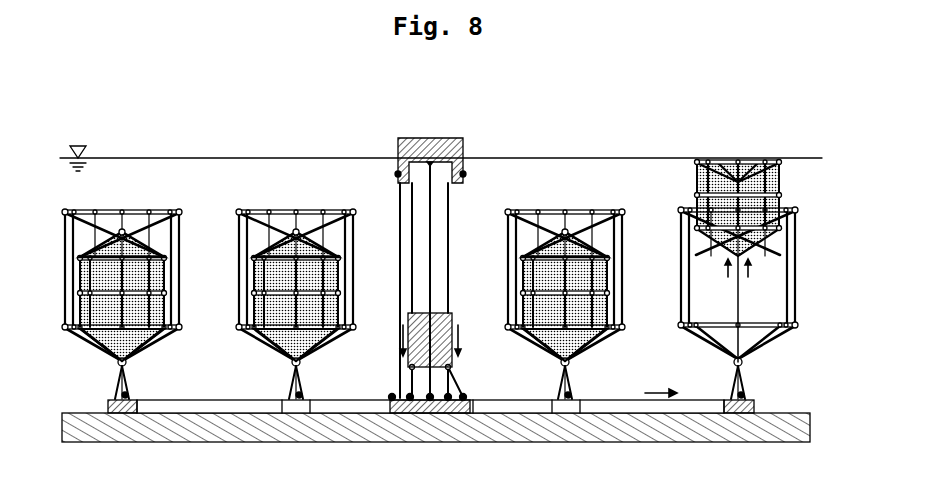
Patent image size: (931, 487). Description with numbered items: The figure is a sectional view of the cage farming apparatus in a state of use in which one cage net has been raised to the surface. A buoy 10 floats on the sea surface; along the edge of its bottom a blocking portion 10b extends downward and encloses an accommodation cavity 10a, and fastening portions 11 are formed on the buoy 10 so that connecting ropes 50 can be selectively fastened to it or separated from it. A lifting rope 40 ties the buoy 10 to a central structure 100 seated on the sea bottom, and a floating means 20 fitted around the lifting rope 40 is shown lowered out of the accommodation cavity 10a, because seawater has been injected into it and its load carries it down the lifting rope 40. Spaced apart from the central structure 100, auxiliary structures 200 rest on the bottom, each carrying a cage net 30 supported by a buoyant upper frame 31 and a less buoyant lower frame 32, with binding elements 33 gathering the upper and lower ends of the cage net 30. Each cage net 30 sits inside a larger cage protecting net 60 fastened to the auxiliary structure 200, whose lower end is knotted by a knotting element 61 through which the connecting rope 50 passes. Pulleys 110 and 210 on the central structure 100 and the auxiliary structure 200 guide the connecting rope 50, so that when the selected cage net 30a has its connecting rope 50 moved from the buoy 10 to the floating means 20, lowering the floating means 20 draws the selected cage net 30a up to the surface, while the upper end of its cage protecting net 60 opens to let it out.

The buoy 10 is at (426, 144).
The accommodation cavity 10a is at (445, 178).
The blocking portion 10b is at (464, 158).
The fastening portion 11 is at (395, 172).
The floating means 20 is at (448, 324).
The cage net 30 is at (165, 293).
The selected cage net 30a is at (698, 172).
The upper frame 31 is at (602, 252).
The lower frame 32 is at (603, 334).
The binding element 33 is at (583, 356).
The lifting rope 40 is at (408, 321).
The connecting rope 50 is at (400, 232).
The cage protecting net 60 is at (149, 232).
The knotting element 61 is at (580, 406).
The central structure 100 is at (407, 414).
The pulley 110 is at (392, 395).
The auxiliary structure 200 is at (765, 413).
The pulley 210 is at (738, 414).